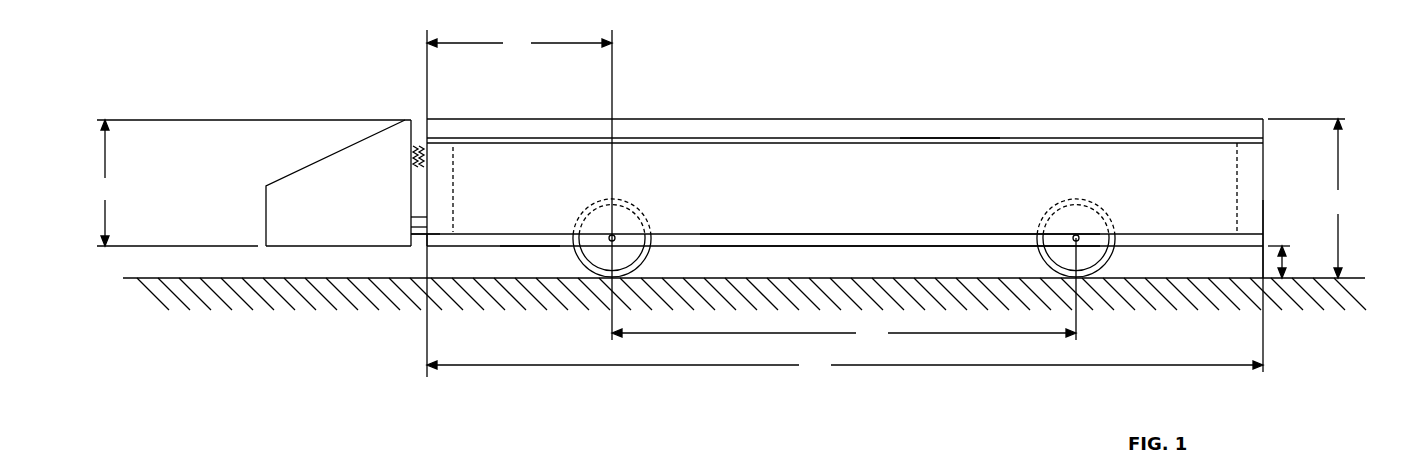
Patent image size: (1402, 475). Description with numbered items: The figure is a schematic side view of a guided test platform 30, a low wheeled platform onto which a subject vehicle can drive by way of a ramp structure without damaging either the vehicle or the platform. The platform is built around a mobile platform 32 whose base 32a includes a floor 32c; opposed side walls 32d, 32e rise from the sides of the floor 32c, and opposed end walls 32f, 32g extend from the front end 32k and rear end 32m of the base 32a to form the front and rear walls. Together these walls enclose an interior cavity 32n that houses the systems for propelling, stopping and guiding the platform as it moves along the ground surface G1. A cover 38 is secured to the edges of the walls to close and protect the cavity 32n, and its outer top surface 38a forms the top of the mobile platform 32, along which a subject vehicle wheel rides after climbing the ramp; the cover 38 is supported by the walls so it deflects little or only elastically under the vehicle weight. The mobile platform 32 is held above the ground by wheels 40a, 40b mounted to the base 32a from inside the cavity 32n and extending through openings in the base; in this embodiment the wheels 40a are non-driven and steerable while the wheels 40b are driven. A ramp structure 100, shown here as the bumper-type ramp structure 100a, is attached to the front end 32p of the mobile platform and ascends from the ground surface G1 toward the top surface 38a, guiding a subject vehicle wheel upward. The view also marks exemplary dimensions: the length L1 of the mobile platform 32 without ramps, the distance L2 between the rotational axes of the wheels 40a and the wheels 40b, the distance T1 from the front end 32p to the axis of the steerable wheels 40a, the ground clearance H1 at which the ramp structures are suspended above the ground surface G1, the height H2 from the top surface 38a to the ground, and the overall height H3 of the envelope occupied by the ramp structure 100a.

The guided test platform 30 is at (160, 98).
The ramp structure 100 is at (410, 110).
The ramp structure 100a is at (281, 178).
The mobile platform 32 is at (910, 202).
The base 32a is at (443, 248).
The floor 32c is at (533, 238).
The side wall 32d is at (793, 201).
The side wall 32e is at (900, 213).
The end wall 32f is at (442, 200).
The end wall 32g is at (1240, 187).
The front end 32k is at (428, 240).
The rear end 32m is at (1255, 240).
The interior cavity 32n is at (945, 178).
The front end 32p is at (420, 182).
The cover 38 is at (750, 130).
The top surface 38a is at (688, 119).
The steerable wheels 40a is at (647, 263).
The driven wheels 40b is at (1105, 266).
The ground surface G1 is at (190, 279).
The ground clearance H1 is at (1288, 260).
The top surface height H2 is at (1309, 198).
The ramp structure height H3 is at (106, 183).
The front end to steerable wheel axis distance T1 is at (519, 185).
The mobile platform length L1 is at (845, 364).
The wheel axis spacing L2 is at (844, 290).